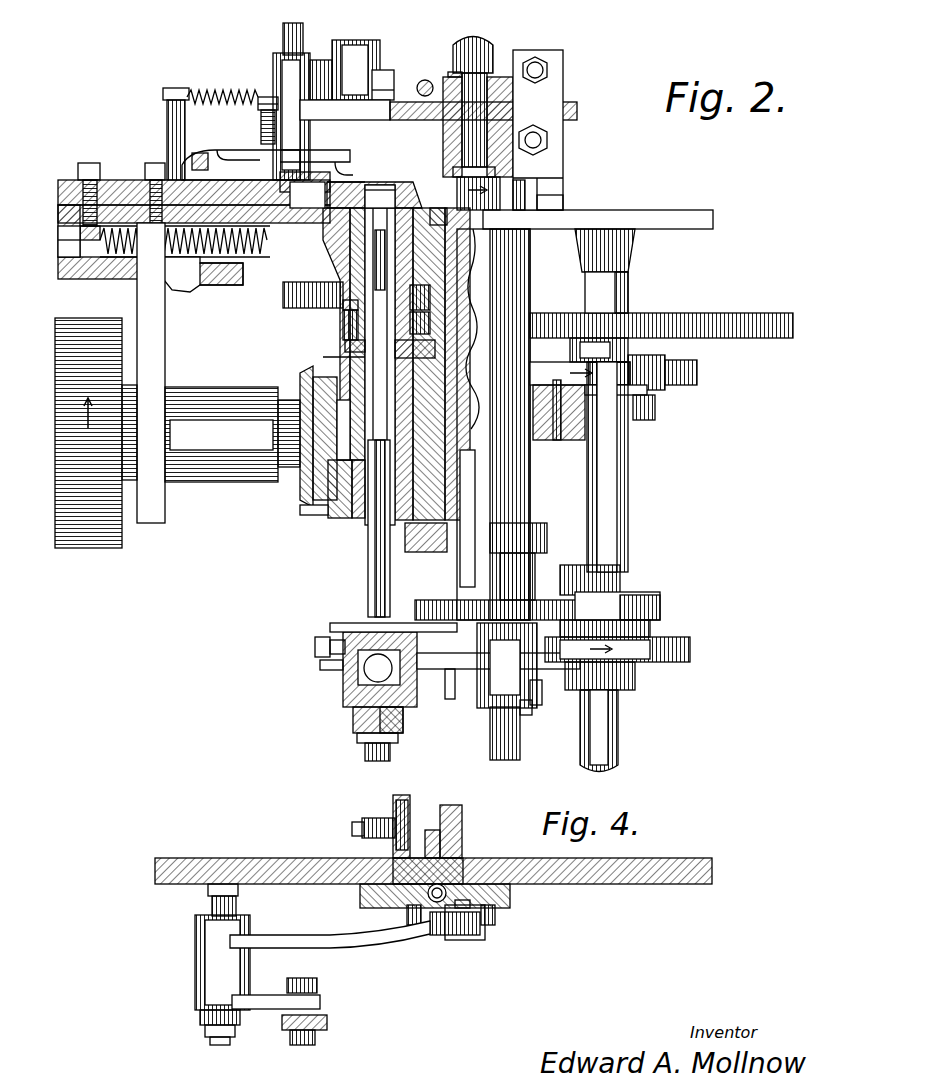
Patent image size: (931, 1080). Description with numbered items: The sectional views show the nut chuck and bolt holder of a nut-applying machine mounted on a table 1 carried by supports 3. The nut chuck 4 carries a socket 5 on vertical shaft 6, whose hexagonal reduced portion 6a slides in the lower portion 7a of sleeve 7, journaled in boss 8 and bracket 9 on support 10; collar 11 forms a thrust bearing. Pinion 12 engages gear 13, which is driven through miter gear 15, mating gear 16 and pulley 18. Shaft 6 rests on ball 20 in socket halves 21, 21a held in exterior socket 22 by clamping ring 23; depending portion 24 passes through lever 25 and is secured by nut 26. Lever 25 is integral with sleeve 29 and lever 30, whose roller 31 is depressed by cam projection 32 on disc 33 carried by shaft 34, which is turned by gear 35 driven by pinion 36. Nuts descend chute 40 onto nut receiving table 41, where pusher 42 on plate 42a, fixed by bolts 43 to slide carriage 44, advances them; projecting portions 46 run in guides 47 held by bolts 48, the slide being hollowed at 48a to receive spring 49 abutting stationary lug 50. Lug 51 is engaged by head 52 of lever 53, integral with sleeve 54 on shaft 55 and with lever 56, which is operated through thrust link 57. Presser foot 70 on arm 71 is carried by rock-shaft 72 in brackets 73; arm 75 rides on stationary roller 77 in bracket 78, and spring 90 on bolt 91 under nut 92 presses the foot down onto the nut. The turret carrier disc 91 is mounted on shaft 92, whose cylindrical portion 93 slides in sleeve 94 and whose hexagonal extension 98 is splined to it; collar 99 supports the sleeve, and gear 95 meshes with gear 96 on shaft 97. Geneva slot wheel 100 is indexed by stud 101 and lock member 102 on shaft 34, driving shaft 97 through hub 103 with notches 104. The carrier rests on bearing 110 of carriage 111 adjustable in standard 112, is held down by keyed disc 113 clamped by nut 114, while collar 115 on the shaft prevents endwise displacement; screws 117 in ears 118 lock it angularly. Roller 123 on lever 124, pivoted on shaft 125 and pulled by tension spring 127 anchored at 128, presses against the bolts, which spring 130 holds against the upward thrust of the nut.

In FIG. 2, the table or bed 1 is at (680, 220).
In FIG. 4, the table or bed 1 is at (665, 870).
In FIG. 2, the support 3 is at (150, 356).
In FIG. 2, the nut chuck 4 is at (400, 202).
In FIG. 2, the socket 5 is at (372, 190).
In FIG. 2, the vertical shaft 6 is at (380, 272).
In FIG. 2, the reduced portion 6a is at (368, 580).
In FIG. 2, the sleeve 7 is at (345, 346).
In FIG. 2, the lower portion of sleeve 7a is at (360, 518).
In FIG. 2, the boss 8 is at (340, 245).
In FIG. 2, the bracket 9 is at (335, 515).
In FIG. 2, the support 10 is at (430, 398).
In FIG. 2, the collar 11 is at (305, 490).
In FIG. 2, the pinion 12 is at (343, 315).
In FIG. 2, the gear 13 is at (283, 295).
In FIG. 2, the miter gear 15 is at (325, 357).
In FIG. 2, the mating gear 16 is at (300, 386).
In FIG. 2, the pulley 18 is at (88, 433).
In FIG. 2, the ball 20 is at (365, 670).
In FIG. 2, the socket bearing half 21 is at (317, 650).
In FIG. 2, the socket bearing half 21a is at (345, 690).
In FIG. 2, the exterior socket 22 is at (340, 668).
In FIG. 2, the clamping ring 23 is at (350, 635).
In FIG. 2, the depending portion 24 is at (353, 722).
In FIG. 2, the lever 25 is at (403, 718).
In FIG. 2, the nut 26 is at (365, 750).
In FIG. 2, the sleeve 29 is at (455, 675).
In FIG. 2, the lever 30 is at (492, 715).
In FIG. 2, the anti-friction roller 31 is at (530, 722).
In FIG. 2, the cam projection 32 is at (537, 695).
In FIG. 2, the disc 33 is at (690, 648).
In FIG. 2, the shaft 34 is at (610, 480).
In FIG. 2, the gear 35 is at (770, 338).
In FIG. 2, the pinion 36 is at (343, 330).
In FIG. 2, the chute 40 is at (375, 50).
In FIG. 2, the nut receiving table 41 is at (362, 182).
In FIG. 2, the pusher member 42 is at (320, 190).
In FIG. 4, the pusher member 42 is at (440, 848).
In FIG. 2, the plate 42a is at (135, 180).
In FIG. 2, the bolts 43 is at (155, 163).
In FIG. 2, the slide carriage 44 is at (70, 215).
In FIG. 4, the slide carriage 44 is at (440, 872).
In FIG. 4, the laterally projecting portions 46 is at (420, 900).
In FIG. 4, the guides 47 is at (365, 893).
In FIG. 4, the bolts 48 is at (412, 925).
In FIG. 2, the hollowed out portion 48a is at (65, 280).
In FIG. 4, the hollowed out portion 48a is at (460, 908).
In FIG. 2, the spring 49 is at (130, 257).
In FIG. 2, the stationary lug 50 is at (78, 262).
In FIG. 2, the lug 51 is at (185, 287).
In FIG. 4, the lug 51 is at (445, 940).
In FIG. 2, the head 52 is at (225, 286).
In FIG. 4, the head 52 is at (440, 935).
In FIG. 4, the lever 53 is at (350, 940).
In FIG. 4, the sleeve 54 is at (205, 975).
In FIG. 4, the shaft 55 is at (210, 905).
In FIG. 4, the lever 56 is at (270, 1010).
In FIG. 4, the thrust link 57 is at (325, 1018).
In FIG. 2, the presser foot 70 is at (355, 160).
In FIG. 2, the arm 71 is at (225, 150).
In FIG. 2, the rock-shaft 72 is at (200, 153).
In FIG. 2, the brackets 73 is at (225, 180).
In FIG. 4, the brackets 73 is at (405, 800).
In FIG. 4, the arm 75 is at (395, 808).
In FIG. 4, the stationary roller 77 is at (400, 830).
In FIG. 4, the bracket 78 is at (355, 830).
In FIG. 2, the spring 90 is at (262, 120).
In FIG. 2, the bolt 91 is at (266, 97).
In FIG. 2, the nut 92 is at (260, 97).
In FIG. 2, the cylindrical portion 93 is at (563, 198).
In FIG. 2, the sleeve 94 is at (470, 263).
In FIG. 2, the gear 95 is at (420, 553).
In FIG. 2, the gear 96 is at (540, 530).
In FIG. 2, the shaft 97 is at (535, 565).
In FIG. 2, the reduced hexagonal extension 98 is at (466, 560).
In FIG. 2, the collar 99 is at (440, 208).
In FIG. 2, the slot wheel member 100 is at (525, 602).
In FIG. 2, the indexing stud 101 is at (615, 592).
In FIG. 2, the cylindrical lock member 102 is at (655, 608).
In FIG. 2, the hub 103 is at (485, 645).
In FIG. 2, the notches 104 is at (455, 669).
In FIG. 2, the bearing 110 is at (563, 146).
In FIG. 2, the carriage 111 is at (563, 165).
In FIG. 2, the standard 112 is at (563, 62).
In FIG. 2, the disc 113 is at (455, 85).
In FIG. 2, the nut 114 is at (500, 60).
In FIG. 2, the collar 115 is at (563, 188).
In FIG. 2, the screws 117 is at (422, 86).
In FIG. 2, the ears 118 is at (563, 80).
In FIG. 2, the anti-friction roller 123 is at (345, 110).
In FIG. 2, the lever 124 is at (318, 85).
In FIG. 2, the shaft 125 is at (288, 45).
In FIG. 2, the tension spring 127 is at (210, 92).
In FIG. 2, the anchor 128 is at (170, 118).
In FIG. 2, the spring 130 is at (383, 78).